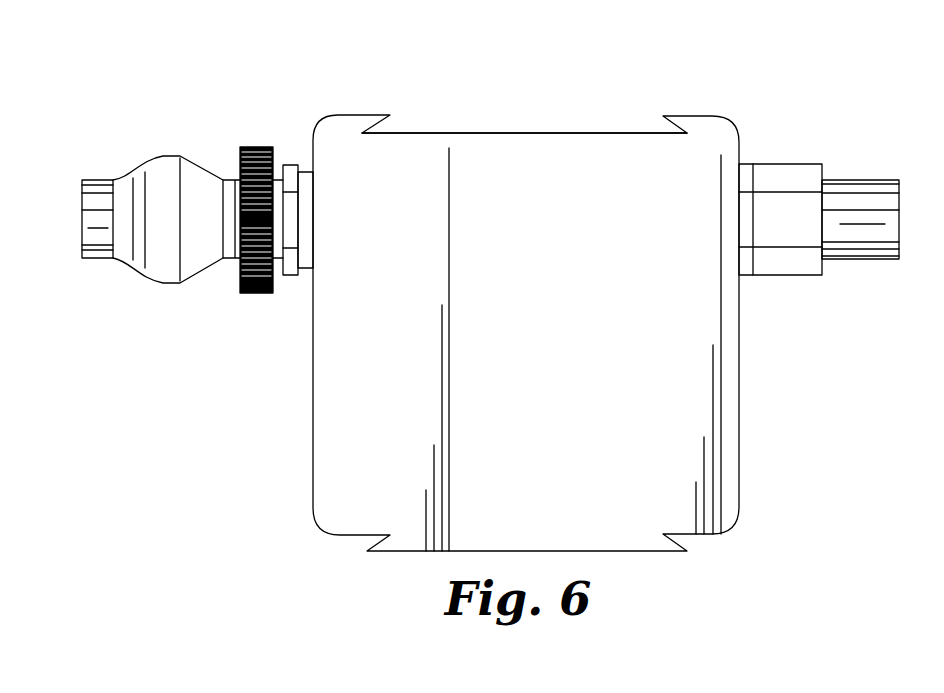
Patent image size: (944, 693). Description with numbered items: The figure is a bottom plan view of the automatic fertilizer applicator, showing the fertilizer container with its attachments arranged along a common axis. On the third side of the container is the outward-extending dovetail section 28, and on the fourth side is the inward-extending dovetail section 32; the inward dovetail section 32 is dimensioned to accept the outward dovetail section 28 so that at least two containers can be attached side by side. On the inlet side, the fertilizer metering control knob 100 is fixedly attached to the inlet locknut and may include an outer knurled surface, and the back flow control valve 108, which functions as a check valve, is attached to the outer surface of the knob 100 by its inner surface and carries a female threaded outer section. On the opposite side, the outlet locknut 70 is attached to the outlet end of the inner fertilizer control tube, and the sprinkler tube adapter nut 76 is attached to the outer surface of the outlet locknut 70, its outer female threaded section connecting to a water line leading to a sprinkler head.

The outward-extending dovetail section 28 is at (688, 548).
The inward-extending dovetail section 32 is at (668, 128).
The outlet locknut 70 is at (745, 170).
The sprinkler tube adapter nut 76 is at (793, 253).
The fertilizer metering control knob 100 is at (250, 286).
The back flow control valve 108 is at (195, 180).